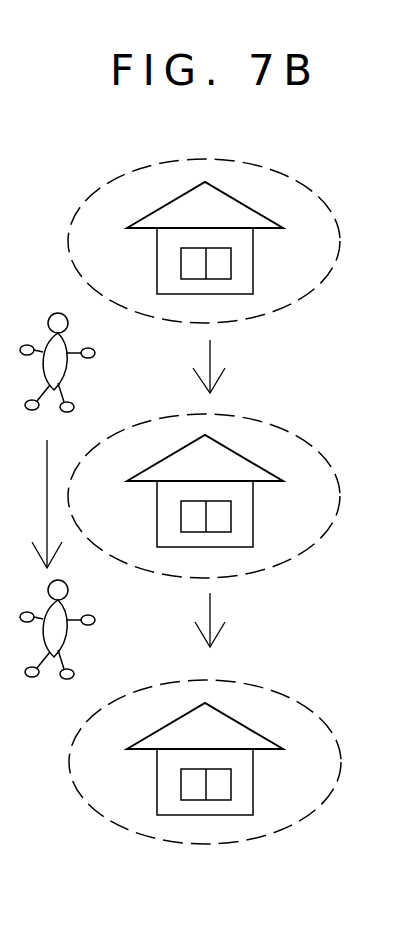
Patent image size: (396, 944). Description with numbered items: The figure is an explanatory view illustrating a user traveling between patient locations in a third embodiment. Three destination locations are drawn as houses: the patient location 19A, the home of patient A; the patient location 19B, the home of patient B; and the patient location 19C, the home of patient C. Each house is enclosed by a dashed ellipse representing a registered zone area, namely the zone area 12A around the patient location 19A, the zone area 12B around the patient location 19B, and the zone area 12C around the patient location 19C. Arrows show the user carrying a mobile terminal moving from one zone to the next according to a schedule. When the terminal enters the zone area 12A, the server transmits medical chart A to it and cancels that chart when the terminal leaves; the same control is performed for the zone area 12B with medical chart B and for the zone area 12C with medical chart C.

The zone area 12A is at (103, 191).
The zone area 12B is at (103, 431).
The zone area 12C is at (103, 712).
The patient location 19A is at (235, 198).
The patient location 19B is at (236, 452).
The patient location 19C is at (237, 720).